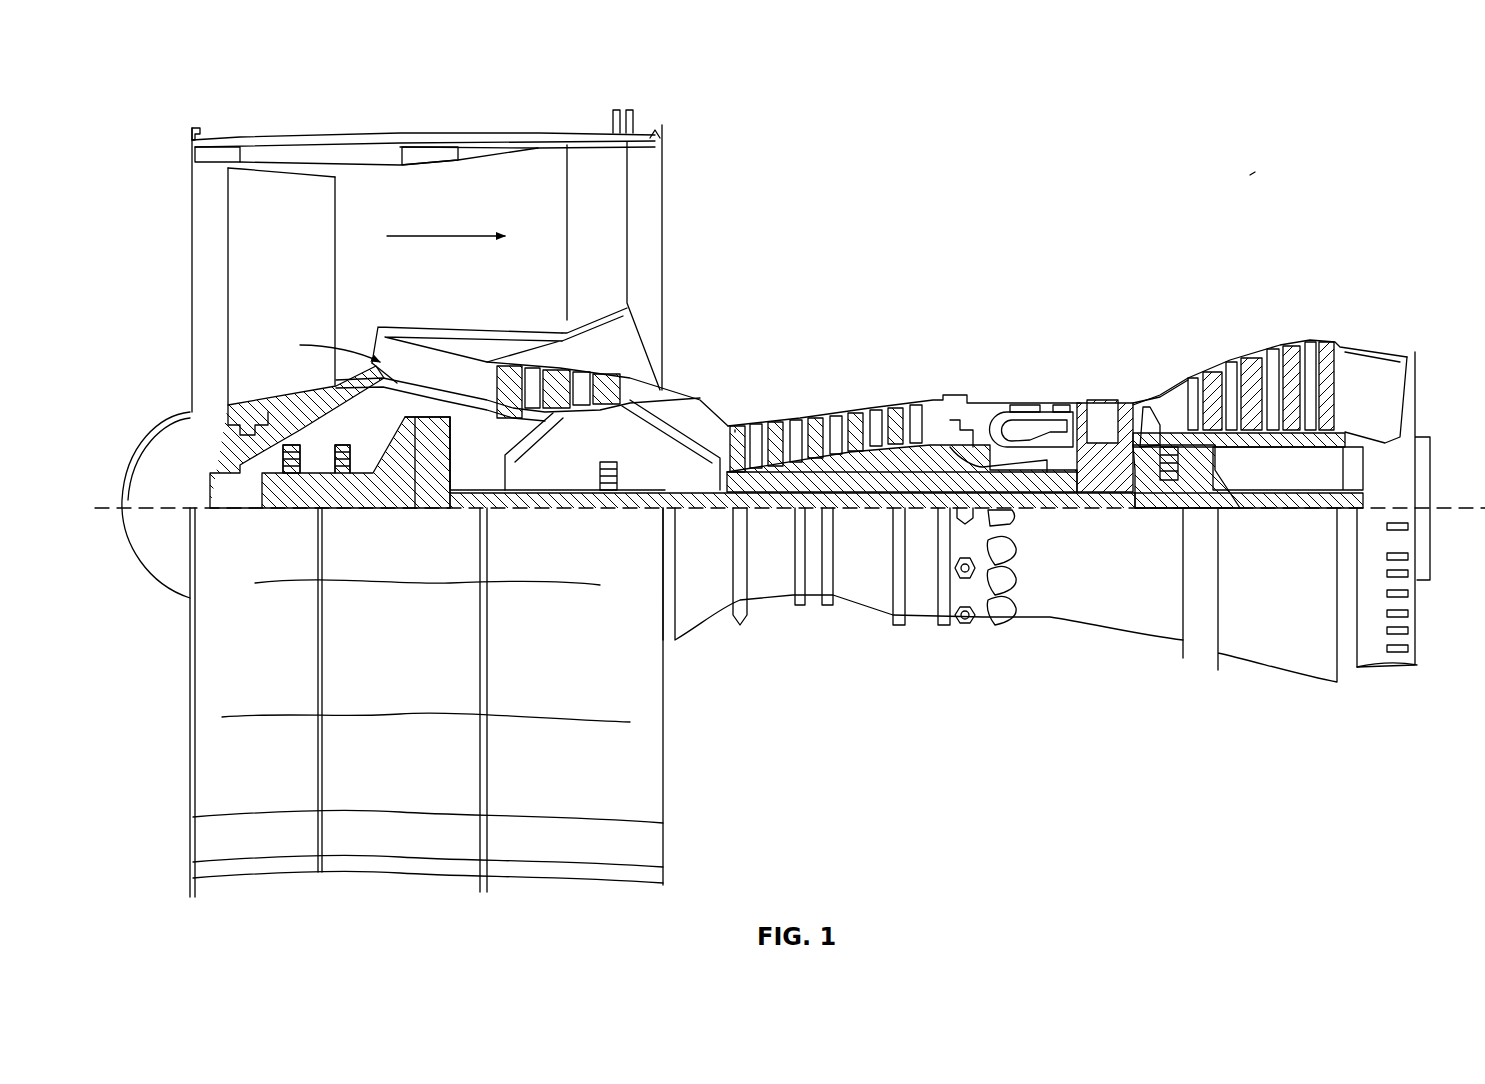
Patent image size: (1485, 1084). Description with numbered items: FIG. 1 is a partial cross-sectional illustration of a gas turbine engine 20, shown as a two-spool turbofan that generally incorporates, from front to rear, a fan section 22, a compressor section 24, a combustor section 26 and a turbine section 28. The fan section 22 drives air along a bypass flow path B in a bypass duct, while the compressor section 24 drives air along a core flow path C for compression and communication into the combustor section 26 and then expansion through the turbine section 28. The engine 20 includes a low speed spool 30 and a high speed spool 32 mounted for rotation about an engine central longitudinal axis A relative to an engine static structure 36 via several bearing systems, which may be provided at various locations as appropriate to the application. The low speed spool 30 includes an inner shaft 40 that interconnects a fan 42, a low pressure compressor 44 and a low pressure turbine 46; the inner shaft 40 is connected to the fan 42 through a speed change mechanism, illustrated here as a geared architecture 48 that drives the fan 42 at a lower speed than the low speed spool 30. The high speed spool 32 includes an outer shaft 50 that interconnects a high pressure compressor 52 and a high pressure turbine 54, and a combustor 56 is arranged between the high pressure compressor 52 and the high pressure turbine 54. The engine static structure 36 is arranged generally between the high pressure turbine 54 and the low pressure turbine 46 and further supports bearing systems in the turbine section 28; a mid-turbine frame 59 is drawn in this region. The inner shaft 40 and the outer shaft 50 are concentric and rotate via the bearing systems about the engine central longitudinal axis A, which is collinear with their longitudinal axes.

The gas turbine engine 20 is at (1238, 176).
The fan section 22 is at (298, 128).
The compressor section 24 is at (851, 365).
The combustor section 26 is at (1006, 360).
The turbine section 28 is at (1207, 300).
The low speed spool 30 is at (886, 506).
The high speed spool 32 is at (938, 455).
The engine static structure 36 is at (924, 628).
The inner shaft 40 is at (676, 500).
The fan 42 is at (310, 263).
The low pressure compressor 44 is at (582, 378).
The low pressure turbine 46 is at (1272, 362).
The geared architecture 48 is at (428, 472).
The outer shaft 50 is at (1052, 482).
The high pressure compressor 52 is at (845, 472).
The high pressure turbine 54 is at (1106, 400).
The combustor 56 is at (1027, 427).
The mid-turbine frame 59 is at (1220, 462).
The engine central longitudinal axis A is at (1440, 506).
The bypass flow path B is at (452, 234).
The core flow path C is at (302, 346).